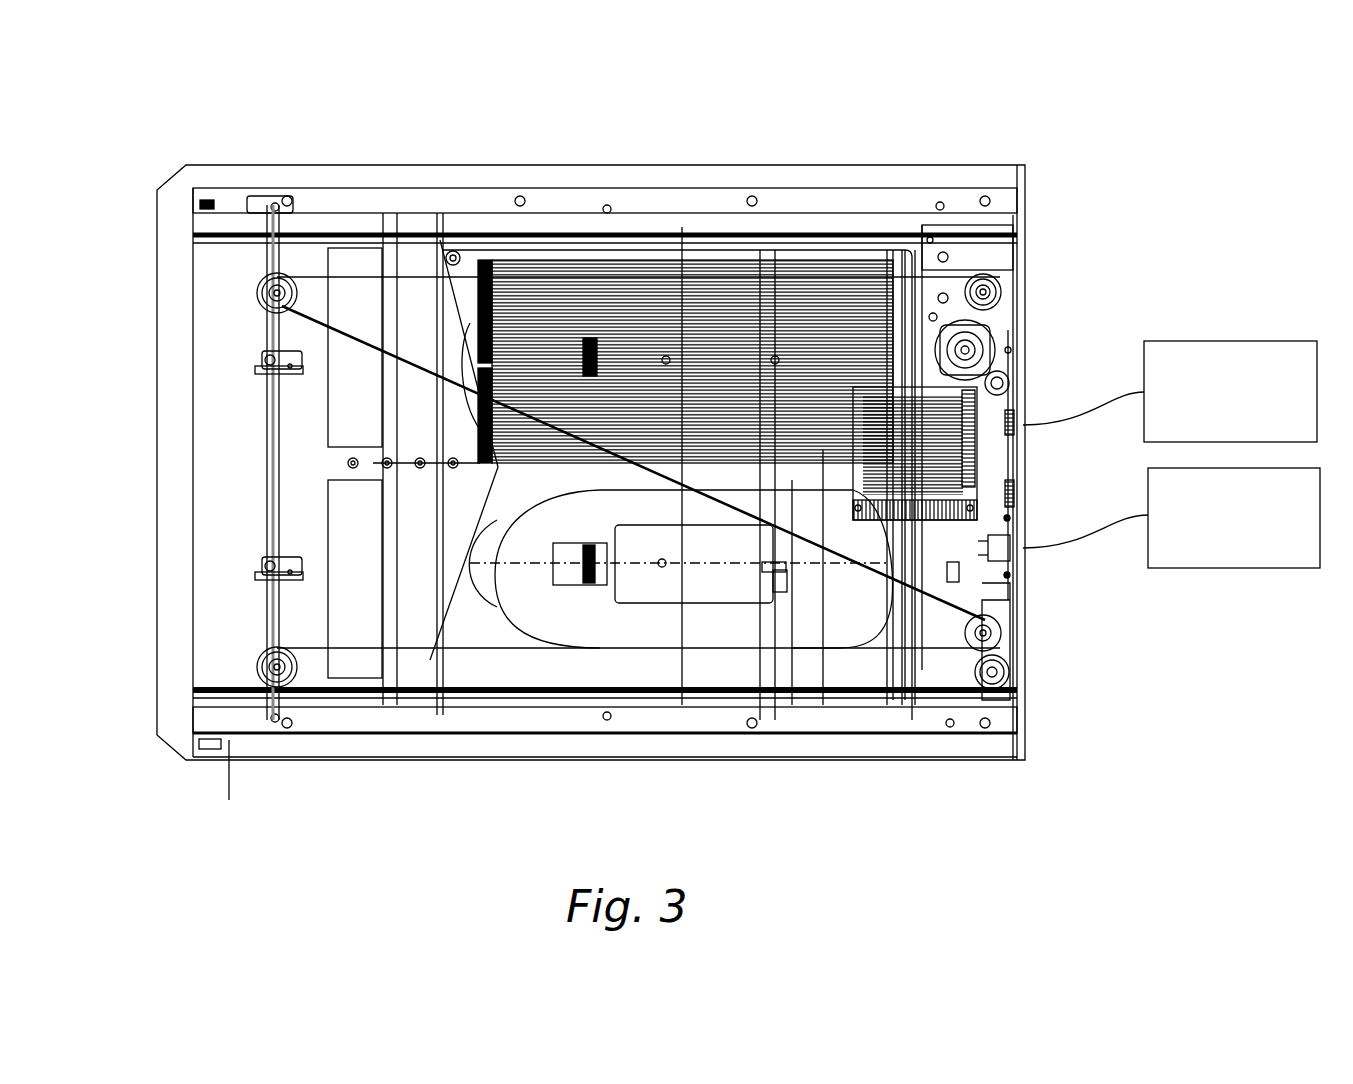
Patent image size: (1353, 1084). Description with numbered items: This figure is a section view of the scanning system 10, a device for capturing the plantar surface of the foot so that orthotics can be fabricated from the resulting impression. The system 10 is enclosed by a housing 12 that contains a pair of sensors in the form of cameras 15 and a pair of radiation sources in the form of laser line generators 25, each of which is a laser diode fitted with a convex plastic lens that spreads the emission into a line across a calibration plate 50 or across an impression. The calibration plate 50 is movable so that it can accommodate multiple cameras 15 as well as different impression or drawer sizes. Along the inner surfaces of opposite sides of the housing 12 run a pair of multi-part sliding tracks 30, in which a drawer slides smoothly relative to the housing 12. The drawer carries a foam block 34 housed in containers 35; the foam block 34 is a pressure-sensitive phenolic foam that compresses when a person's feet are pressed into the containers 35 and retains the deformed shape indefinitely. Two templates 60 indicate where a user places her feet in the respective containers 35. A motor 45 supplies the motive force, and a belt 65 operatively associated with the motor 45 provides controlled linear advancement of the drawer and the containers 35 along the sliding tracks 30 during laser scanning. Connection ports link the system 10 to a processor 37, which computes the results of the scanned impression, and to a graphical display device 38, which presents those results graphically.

The scanning system 10 is at (1003, 128).
The housing 12 is at (782, 762).
The cameras 15 is at (585, 338).
The laser line generators 25 is at (263, 565).
The sliding tracks 30 is at (419, 200).
The foam block 34 is at (713, 627).
The containers 35 is at (478, 660).
The processor 37 is at (1170, 391).
The graphical display device 38 is at (1171, 518).
The motor 45 is at (932, 344).
The calibration plate 50 is at (718, 278).
The templates 60 is at (1000, 378).
The belt 65 is at (835, 653).